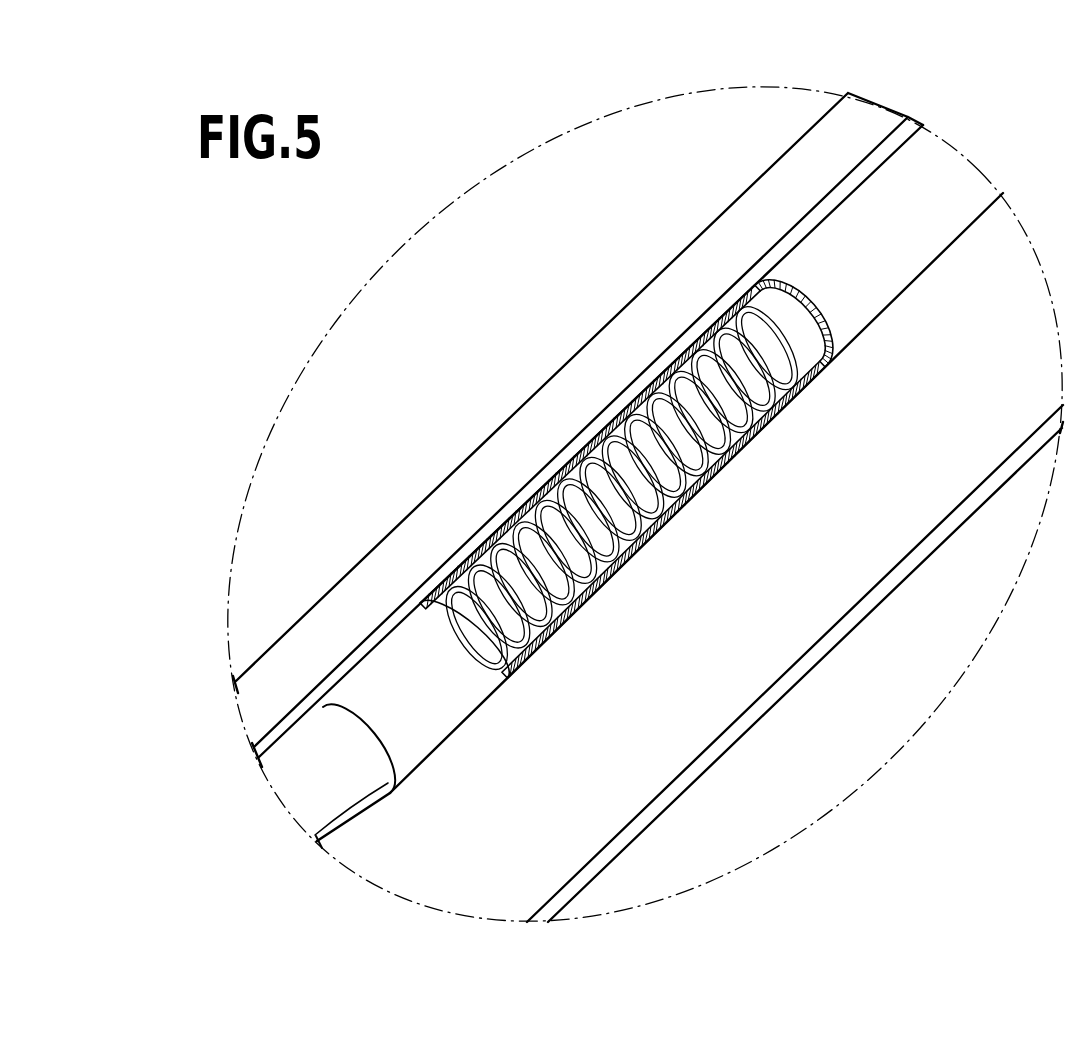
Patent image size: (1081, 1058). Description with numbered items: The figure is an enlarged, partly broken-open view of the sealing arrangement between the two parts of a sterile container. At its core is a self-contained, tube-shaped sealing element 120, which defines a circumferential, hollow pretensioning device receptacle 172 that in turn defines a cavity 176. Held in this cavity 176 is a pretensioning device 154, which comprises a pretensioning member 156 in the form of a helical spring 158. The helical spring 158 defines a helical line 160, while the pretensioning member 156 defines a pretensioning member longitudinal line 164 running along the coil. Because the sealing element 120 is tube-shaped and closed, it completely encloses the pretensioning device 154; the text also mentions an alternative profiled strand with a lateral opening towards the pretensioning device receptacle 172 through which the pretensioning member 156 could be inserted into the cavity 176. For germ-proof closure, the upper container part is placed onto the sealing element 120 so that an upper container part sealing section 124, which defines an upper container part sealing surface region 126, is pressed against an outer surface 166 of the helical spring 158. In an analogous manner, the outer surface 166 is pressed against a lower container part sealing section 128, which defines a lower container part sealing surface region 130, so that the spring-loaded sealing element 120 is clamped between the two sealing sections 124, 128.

The sealing element 120 is at (407, 682).
The upper container part sealing section 124 is at (827, 258).
The upper container part sealing surface region 126 is at (913, 193).
The lower container part sealing section 128 is at (420, 760).
The lower container part sealing surface region 130 is at (380, 800).
The pretensioning device 154 is at (722, 450).
The pretensioning member 156 is at (663, 522).
The helical spring 158 is at (597, 590).
The helical line 160 is at (547, 473).
The pretensioning member longitudinal line 164 is at (625, 402).
The outer surface 166 is at (702, 340).
The pretensioning device receptacle 172 is at (517, 528).
The cavity 176 is at (557, 627).